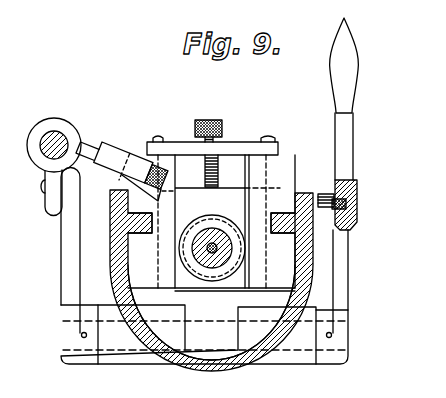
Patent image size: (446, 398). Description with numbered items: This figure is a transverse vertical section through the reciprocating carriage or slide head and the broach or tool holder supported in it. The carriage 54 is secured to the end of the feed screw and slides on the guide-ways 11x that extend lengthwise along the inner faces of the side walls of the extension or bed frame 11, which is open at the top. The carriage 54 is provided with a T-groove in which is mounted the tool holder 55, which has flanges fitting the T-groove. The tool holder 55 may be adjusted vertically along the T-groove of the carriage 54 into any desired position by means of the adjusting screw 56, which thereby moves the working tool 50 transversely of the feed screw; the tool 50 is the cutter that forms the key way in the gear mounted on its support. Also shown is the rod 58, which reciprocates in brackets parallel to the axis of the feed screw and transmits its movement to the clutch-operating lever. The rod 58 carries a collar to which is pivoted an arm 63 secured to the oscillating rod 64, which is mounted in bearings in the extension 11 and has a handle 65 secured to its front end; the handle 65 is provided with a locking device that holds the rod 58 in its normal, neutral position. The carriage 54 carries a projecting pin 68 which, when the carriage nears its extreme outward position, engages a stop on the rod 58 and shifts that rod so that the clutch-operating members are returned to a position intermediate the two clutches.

The extension or bed frame 11 is at (250, 366).
The guide-ways 11x is at (366, 242).
The working tool 50 is at (213, 247).
The carriage 54 is at (280, 170).
The tool holder 55 is at (223, 196).
The adjusting screw 56 is at (216, 120).
The rod 58 is at (50, 128).
The arm 63 is at (64, 260).
The oscillating rod 64 is at (213, 343).
The handle 65 is at (345, 148).
The projecting pin 68 is at (92, 147).